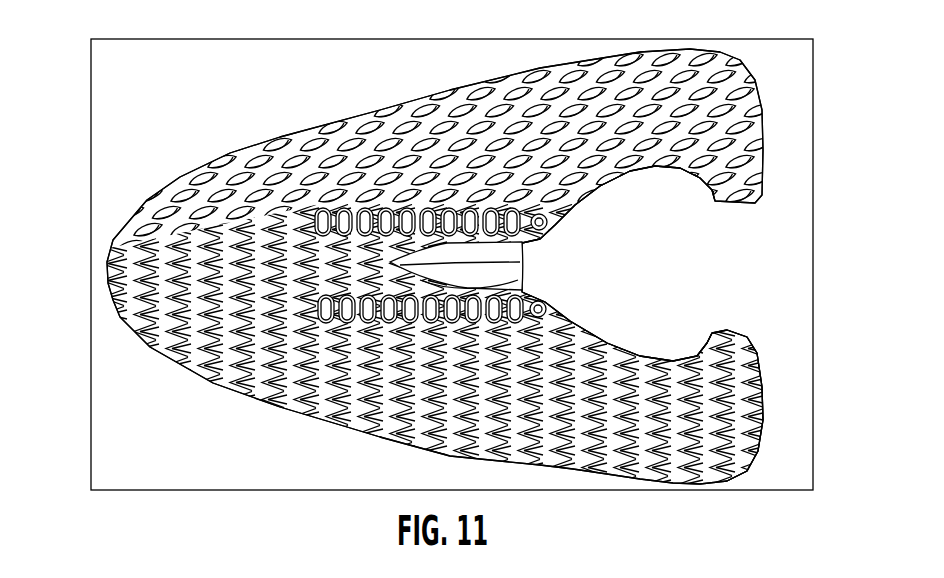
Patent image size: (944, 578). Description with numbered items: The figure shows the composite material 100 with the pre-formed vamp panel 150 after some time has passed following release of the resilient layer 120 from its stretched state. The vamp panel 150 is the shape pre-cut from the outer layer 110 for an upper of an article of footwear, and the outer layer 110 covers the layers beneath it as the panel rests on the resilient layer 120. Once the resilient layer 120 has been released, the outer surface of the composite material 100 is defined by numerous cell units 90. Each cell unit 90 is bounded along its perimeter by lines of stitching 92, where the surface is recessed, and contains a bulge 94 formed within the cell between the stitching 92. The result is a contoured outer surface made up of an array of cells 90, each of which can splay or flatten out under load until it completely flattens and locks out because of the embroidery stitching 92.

The composite material 100 is at (726, 48).
The outer layer 110 is at (755, 101).
The resilient layer 120 is at (735, 262).
The vamp panel 150 is at (142, 196).
The cell units 90 is at (697, 383).
The lines of stitching 92 is at (753, 352).
The bulges 94 is at (767, 405).